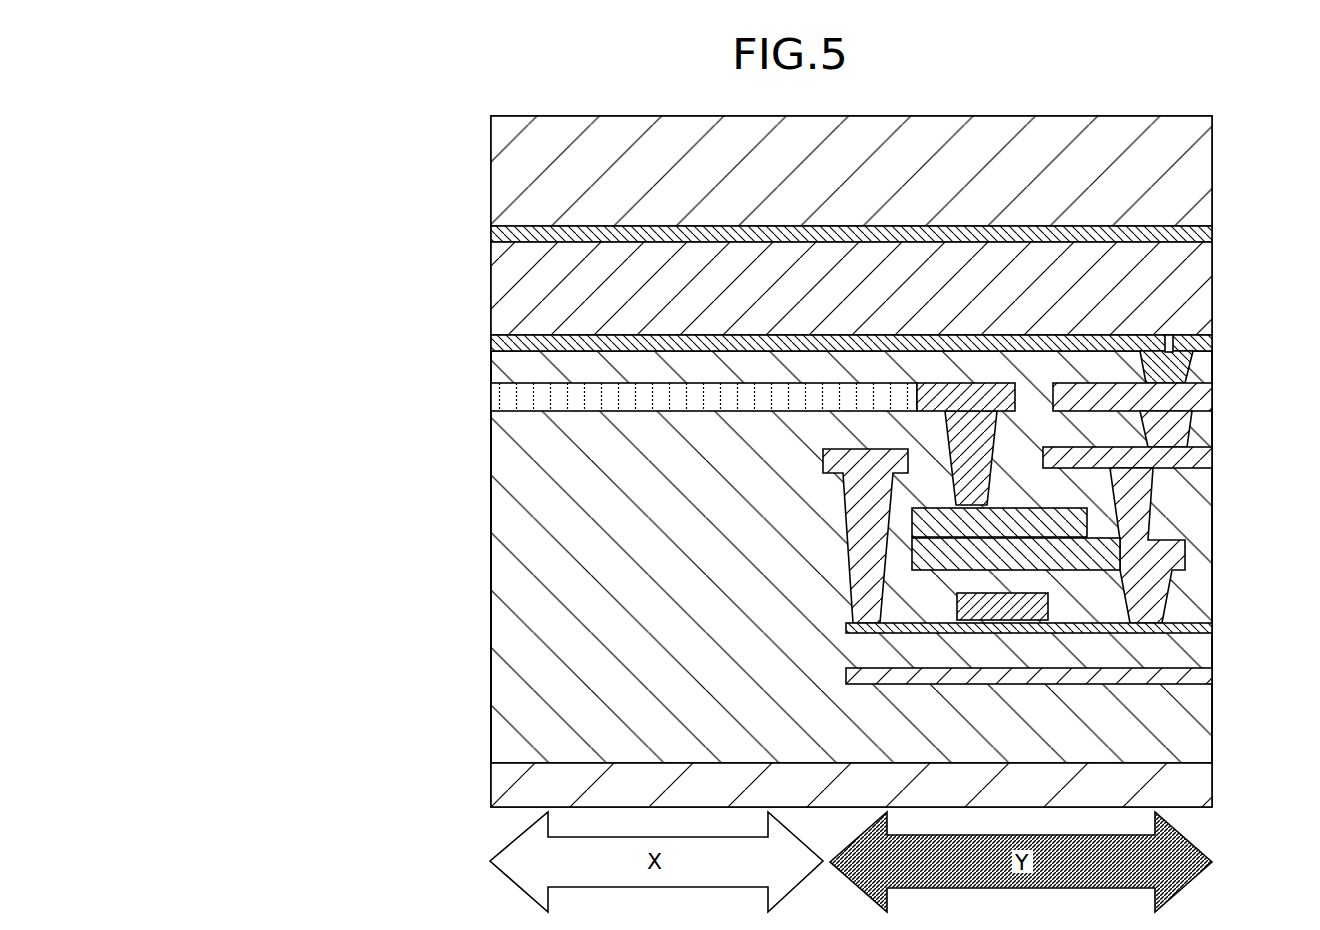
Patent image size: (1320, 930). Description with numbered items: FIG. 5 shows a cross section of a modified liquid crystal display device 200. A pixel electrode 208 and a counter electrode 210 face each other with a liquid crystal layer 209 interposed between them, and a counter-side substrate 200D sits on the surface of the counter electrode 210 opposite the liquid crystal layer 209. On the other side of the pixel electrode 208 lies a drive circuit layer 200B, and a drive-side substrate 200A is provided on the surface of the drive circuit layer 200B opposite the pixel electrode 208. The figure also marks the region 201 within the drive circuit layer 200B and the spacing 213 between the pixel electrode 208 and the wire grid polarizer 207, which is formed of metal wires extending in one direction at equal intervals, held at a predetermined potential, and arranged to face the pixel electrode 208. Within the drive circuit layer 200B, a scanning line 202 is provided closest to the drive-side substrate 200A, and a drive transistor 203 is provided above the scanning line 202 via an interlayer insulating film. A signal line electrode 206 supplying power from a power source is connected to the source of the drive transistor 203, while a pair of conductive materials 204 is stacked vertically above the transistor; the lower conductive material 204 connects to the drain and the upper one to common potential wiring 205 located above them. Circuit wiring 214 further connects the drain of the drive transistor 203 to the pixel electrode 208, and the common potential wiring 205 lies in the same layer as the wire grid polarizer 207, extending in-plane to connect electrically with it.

The liquid crystal display device 200 is at (1241, 71).
The drive-side substrate 200A is at (363, 760).
The drive circuit layer 200B is at (363, 350).
The counter-side substrate 200D is at (363, 115).
The insulating layer 201 is at (1185, 718).
The scanning line 202 is at (1200, 678).
The drive transistor 203 is at (1047, 605).
The conductive materials 204 is at (1072, 519).
The common potential wiring 205 is at (1150, 470).
The signal line electrode 206 is at (830, 460).
The wire grid polarizer 207 is at (497, 398).
The pixel electrode 208 is at (1212, 343).
The liquid crystal layer 209 is at (1195, 288).
The counter electrode 210 is at (1200, 238).
The insulating film 213 is at (513, 368).
The circuit wiring 214 is at (1213, 453).